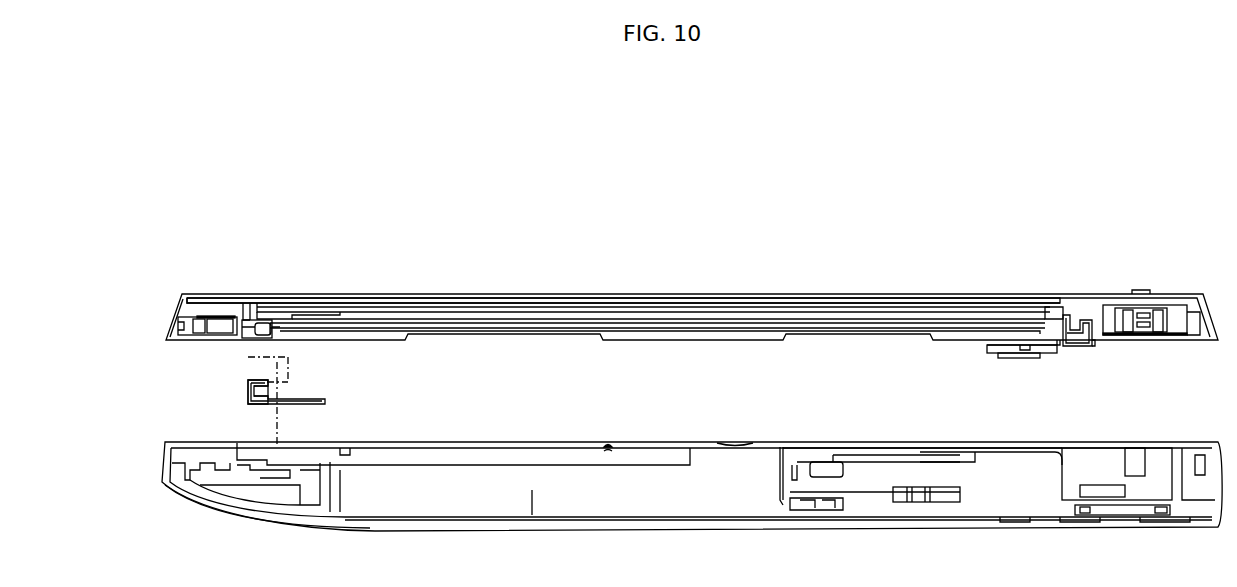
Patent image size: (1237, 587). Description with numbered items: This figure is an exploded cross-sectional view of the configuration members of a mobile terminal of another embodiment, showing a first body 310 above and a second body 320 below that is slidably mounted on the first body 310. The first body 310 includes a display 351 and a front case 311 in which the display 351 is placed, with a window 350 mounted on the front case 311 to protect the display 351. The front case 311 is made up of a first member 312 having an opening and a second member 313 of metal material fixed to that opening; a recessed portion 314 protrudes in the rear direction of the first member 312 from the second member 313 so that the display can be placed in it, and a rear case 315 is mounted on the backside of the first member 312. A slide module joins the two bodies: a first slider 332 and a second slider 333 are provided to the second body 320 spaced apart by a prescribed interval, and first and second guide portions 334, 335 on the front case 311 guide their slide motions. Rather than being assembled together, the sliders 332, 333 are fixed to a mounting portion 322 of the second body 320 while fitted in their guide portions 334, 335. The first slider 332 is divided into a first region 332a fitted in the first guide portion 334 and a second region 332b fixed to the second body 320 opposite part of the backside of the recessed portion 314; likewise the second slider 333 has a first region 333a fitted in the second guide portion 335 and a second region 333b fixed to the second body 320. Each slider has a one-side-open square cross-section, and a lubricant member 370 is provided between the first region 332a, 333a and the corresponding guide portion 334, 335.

The first body 310 is at (163, 294).
The front case 311 is at (285, 242).
The first member 312 is at (243, 306).
The second member 313 is at (272, 312).
The recessed portion 314 is at (379, 335).
The rear case 315 is at (190, 337).
The second body 320 is at (155, 444).
The mounting portion 322 is at (943, 442).
The first slider 332 is at (177, 383).
The first region 332a is at (245, 392).
The second region 332b is at (255, 406).
The second slider 333 is at (1093, 400).
The first region 333a is at (1090, 346).
The second region 333b is at (1052, 352).
The first guide portion 334 is at (278, 325).
The second guide portion 335 is at (1050, 316).
The window 350 is at (208, 297).
The display 351 is at (528, 313).
The lubricant member 370 is at (1072, 325).